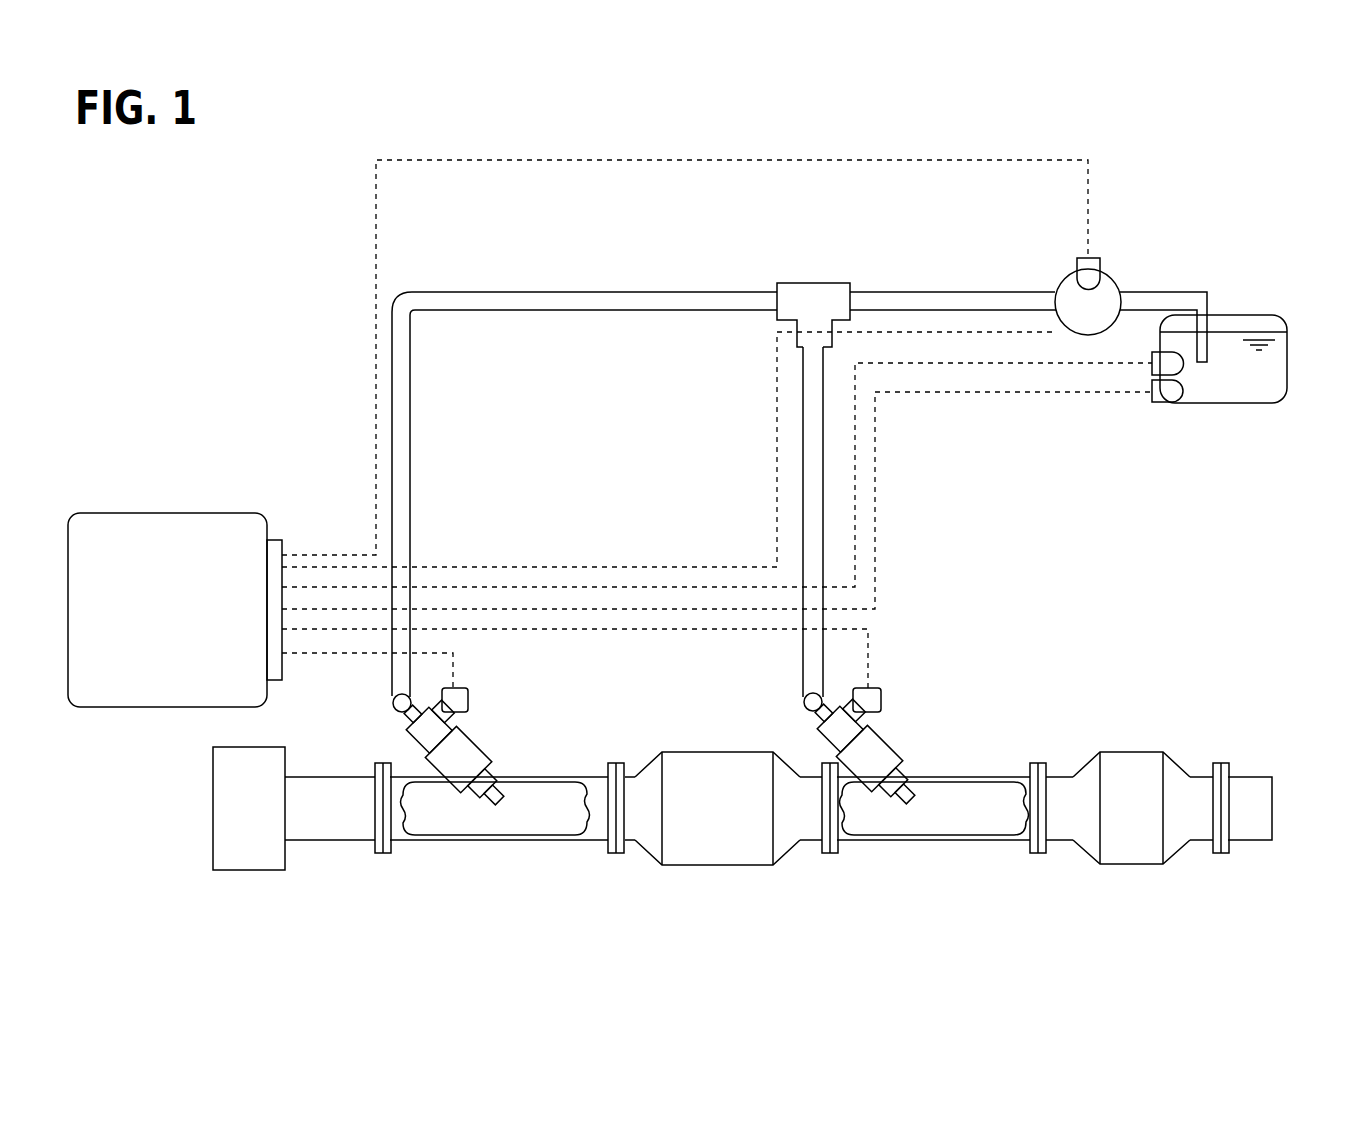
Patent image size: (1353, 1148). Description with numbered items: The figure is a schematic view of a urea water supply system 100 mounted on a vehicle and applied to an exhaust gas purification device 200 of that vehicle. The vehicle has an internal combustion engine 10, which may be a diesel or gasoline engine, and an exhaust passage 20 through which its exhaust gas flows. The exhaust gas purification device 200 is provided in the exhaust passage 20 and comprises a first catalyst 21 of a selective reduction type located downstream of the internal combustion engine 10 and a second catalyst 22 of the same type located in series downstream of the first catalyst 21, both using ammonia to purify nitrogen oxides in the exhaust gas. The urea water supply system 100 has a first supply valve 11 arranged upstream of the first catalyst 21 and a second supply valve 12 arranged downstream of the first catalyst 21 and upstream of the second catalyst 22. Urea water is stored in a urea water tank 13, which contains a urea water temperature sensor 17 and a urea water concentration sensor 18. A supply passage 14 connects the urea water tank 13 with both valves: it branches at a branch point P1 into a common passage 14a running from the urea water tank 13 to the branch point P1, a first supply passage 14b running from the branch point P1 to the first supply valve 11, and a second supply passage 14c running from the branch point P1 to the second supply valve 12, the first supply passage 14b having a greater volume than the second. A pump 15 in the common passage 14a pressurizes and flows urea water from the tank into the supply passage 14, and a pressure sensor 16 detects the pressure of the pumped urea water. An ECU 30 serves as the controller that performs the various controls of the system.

The internal combustion engine 10 is at (247, 871).
The first supply valve 11 is at (469, 732).
The second supply valve 12 is at (880, 732).
The urea water tank 13 is at (1288, 360).
The supply passage 14 is at (799, 432).
The common passage 14a is at (1028, 283).
The first supply passage 14b is at (707, 292).
The second supply passage 14c is at (803, 363).
The pump 15 is at (1118, 284).
The pressure sensor 16 is at (1092, 258).
The urea water temperature sensor 17 is at (1152, 369).
The urea water concentration sensor 18 is at (1163, 403).
The exhaust passage 20 is at (422, 841).
The first catalyst 21 is at (716, 866).
The second catalyst 22 is at (1129, 865).
The ECU 30 is at (230, 513).
The urea water supply system 100 is at (983, 525).
The exhaust gas purification device 200 is at (747, 796).
The branch point P1 is at (813, 292).